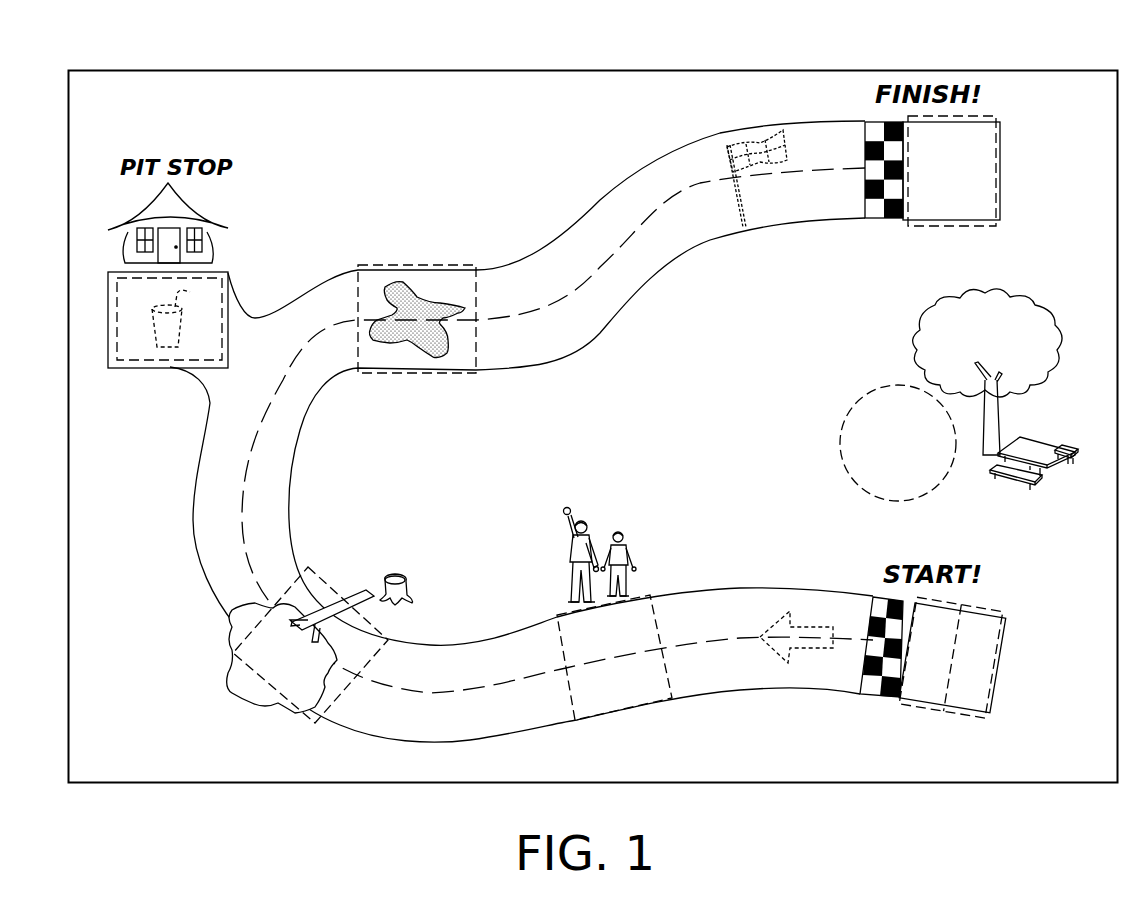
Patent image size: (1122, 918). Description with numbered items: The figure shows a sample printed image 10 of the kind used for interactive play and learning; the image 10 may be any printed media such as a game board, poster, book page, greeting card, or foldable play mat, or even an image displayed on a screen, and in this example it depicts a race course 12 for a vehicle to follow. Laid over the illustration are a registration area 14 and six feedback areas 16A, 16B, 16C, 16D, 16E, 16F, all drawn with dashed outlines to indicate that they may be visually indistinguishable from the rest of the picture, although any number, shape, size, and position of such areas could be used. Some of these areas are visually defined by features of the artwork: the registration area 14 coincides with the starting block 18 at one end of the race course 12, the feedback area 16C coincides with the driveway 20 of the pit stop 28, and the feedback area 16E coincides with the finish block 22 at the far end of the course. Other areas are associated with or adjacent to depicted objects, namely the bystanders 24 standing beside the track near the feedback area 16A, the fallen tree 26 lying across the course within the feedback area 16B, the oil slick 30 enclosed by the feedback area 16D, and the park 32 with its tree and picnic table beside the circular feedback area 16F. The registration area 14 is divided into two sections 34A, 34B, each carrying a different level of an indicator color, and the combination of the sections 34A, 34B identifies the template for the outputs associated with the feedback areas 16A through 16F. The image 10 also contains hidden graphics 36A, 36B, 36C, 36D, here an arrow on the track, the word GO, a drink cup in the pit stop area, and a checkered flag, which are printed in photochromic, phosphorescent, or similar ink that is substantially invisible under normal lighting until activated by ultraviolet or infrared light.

The printed image 10 is at (555, 70).
The race course 12 is at (550, 363).
The registration area 14 is at (985, 605).
The starting block 18 is at (1001, 665).
The driveway 20 is at (108, 318).
The finish block 22 is at (1000, 170).
The bystanders 24 is at (580, 520).
The fallen tree 26 is at (362, 600).
The pit stop 28 is at (213, 214).
The oil slick 30 is at (420, 290).
The park 32 is at (1052, 310).
The feedback area 16A is at (660, 603).
The feedback area 16B is at (327, 573).
The feedback area 16C is at (117, 342).
The feedback area 16D is at (388, 265).
The feedback area 16E is at (975, 228).
The feedback area 16F is at (840, 443).
The section 34A is at (975, 698).
The section 34B is at (920, 690).
The hidden graphic 36A is at (776, 620).
The hidden graphic 36B is at (197, 488).
The hidden graphic 36C is at (160, 348).
The hidden graphic 36D is at (752, 130).